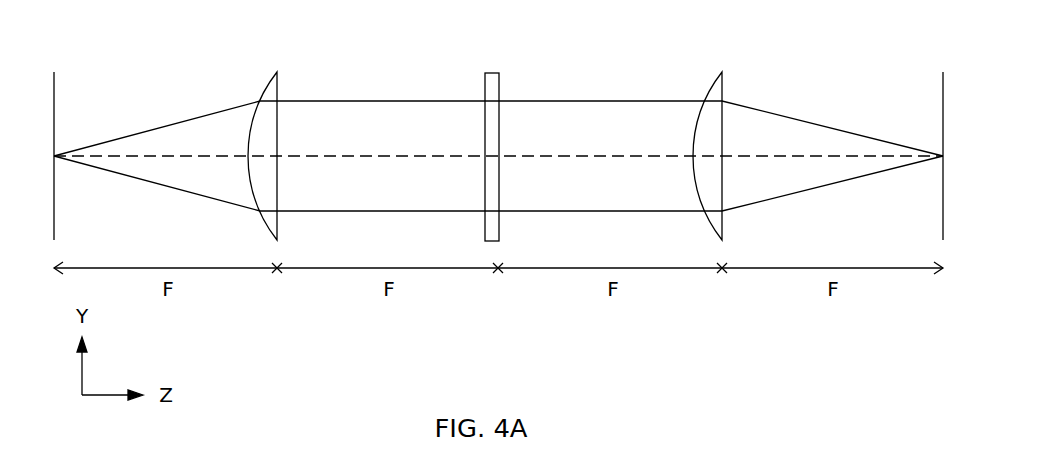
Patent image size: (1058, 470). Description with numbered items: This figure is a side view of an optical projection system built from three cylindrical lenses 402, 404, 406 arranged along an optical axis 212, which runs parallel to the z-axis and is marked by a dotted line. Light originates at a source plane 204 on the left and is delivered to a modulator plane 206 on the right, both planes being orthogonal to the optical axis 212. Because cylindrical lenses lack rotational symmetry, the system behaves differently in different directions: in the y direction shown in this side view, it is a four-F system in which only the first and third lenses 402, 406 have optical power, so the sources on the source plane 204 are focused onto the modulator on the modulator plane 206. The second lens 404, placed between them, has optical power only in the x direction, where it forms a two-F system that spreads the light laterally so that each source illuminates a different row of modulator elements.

The source plane 204 is at (64, 80).
The modulator plane 206 is at (936, 78).
The optical axis 212 is at (336, 155).
The first cylindrical lens 402 is at (268, 62).
The second cylindrical lens 404 is at (498, 60).
The third cylindrical lens 406 is at (718, 62).